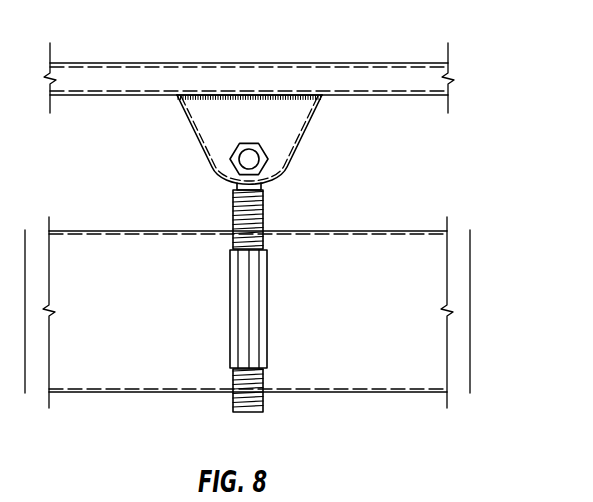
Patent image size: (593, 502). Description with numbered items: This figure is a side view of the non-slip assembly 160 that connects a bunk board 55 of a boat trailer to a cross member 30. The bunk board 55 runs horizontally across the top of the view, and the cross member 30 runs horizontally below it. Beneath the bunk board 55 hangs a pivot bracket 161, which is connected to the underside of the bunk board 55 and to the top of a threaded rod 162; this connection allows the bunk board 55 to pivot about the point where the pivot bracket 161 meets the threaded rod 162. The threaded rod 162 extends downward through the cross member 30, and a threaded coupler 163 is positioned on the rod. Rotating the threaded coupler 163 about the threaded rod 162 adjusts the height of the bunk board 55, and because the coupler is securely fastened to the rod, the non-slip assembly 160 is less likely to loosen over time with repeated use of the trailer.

The bunk board 55 is at (362, 80).
The cross member 30 is at (127, 380).
The non-slip assembly 160 is at (346, 253).
The pivot bracket 161 is at (212, 132).
The threaded rod 162 is at (263, 208).
The threaded coupler 163 is at (242, 322).